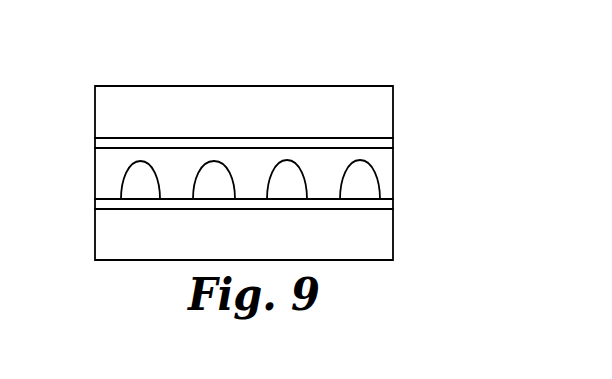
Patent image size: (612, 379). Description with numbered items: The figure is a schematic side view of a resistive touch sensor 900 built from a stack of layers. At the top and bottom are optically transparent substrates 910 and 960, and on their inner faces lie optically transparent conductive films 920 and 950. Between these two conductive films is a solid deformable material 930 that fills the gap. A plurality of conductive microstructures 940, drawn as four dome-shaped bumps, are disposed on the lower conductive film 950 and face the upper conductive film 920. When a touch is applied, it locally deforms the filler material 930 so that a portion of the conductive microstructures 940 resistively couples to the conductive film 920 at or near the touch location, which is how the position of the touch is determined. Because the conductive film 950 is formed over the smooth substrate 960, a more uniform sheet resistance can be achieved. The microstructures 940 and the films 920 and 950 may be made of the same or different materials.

The touch sensor 900 is at (370, 68).
The optically transparent substrate 910 is at (382, 100).
The optically transparent conductive film 920 is at (382, 142).
The solid deformable material 930 is at (383, 170).
The conductive microstructures 940 is at (272, 175).
The optically transparent conductive film 950 is at (383, 203).
The optically transparent substrate 960 is at (383, 243).